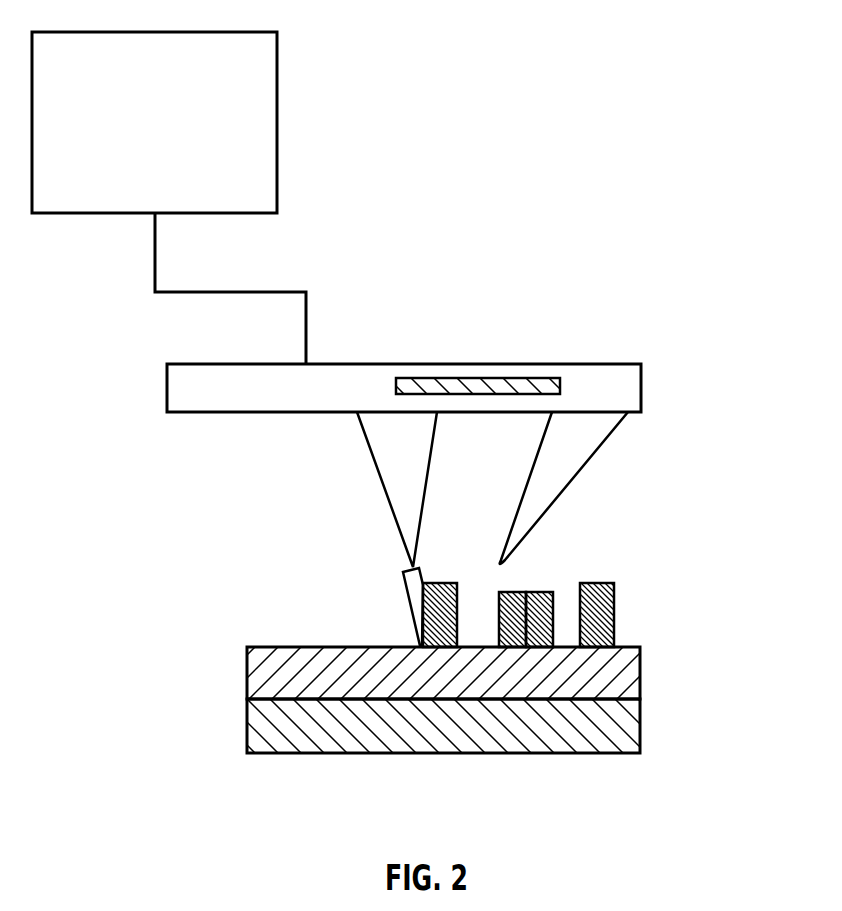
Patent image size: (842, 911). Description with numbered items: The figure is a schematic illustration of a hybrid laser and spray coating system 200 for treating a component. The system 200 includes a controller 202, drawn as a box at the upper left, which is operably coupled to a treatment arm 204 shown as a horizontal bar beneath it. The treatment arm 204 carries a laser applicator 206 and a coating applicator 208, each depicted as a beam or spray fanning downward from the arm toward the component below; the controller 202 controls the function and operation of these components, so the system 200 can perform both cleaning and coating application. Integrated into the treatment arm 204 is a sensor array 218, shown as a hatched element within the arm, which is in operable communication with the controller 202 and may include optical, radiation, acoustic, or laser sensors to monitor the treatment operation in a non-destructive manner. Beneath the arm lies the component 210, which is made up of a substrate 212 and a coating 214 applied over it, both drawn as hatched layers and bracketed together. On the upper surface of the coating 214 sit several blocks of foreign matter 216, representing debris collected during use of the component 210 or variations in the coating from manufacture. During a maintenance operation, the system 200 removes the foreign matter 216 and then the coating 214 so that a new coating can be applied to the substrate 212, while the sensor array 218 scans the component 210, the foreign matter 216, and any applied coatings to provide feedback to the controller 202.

The hybrid laser and spray coating system 200 is at (698, 44).
The controller 202 is at (277, 128).
The treatment arm 204 is at (622, 372).
The laser applicator 206 is at (393, 468).
The coating applicator 208 is at (568, 468).
The component 210 is at (437, 692).
The substrate 212 is at (258, 732).
The coating 214 is at (258, 680).
The foreign matter 216 is at (615, 612).
The sensor array 218 is at (463, 378).